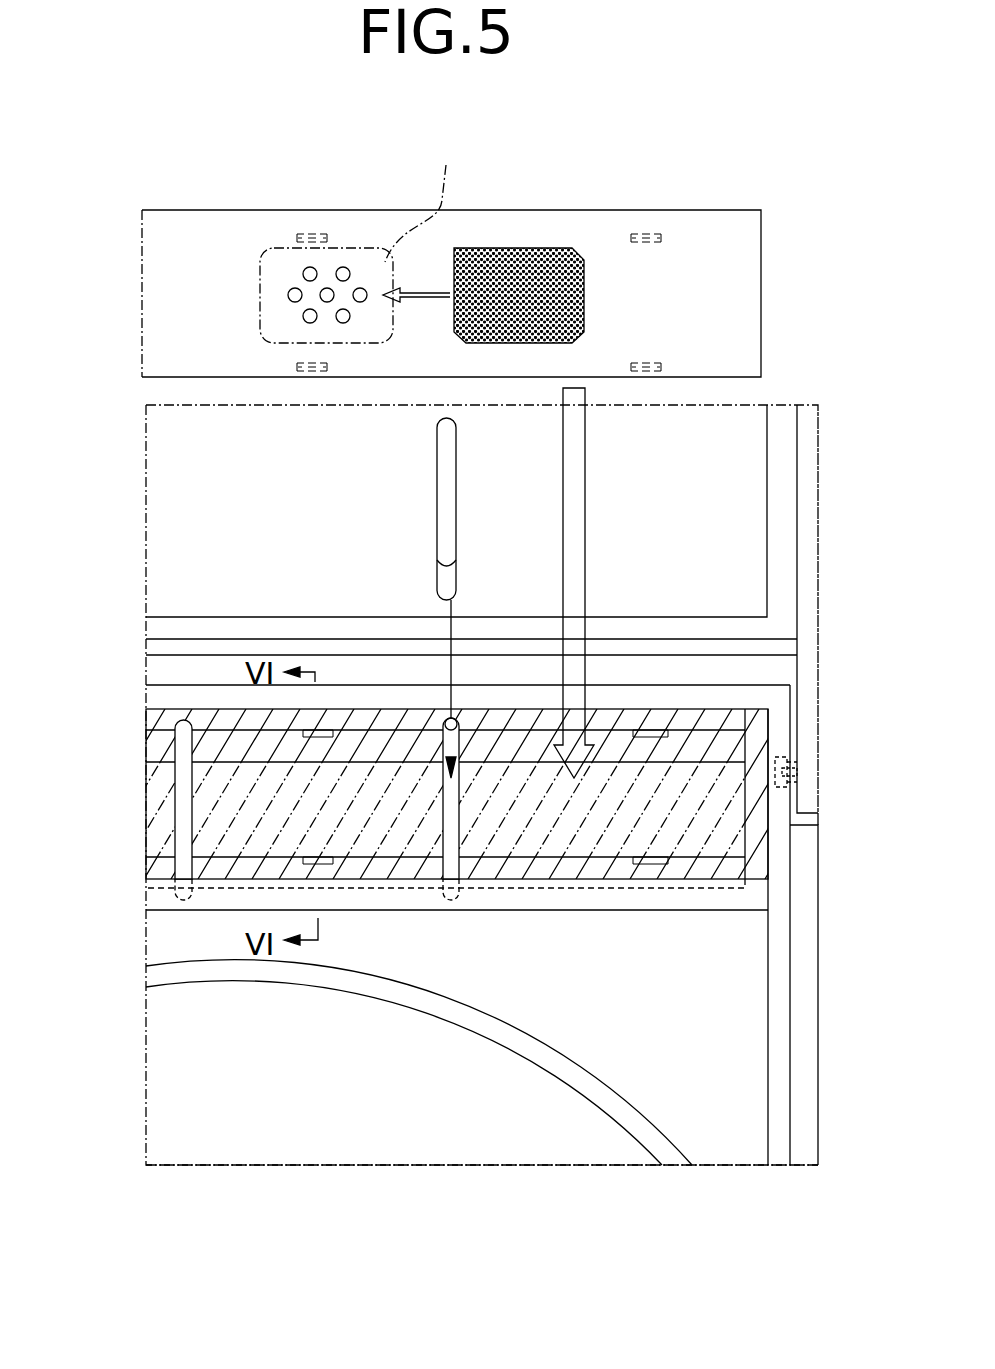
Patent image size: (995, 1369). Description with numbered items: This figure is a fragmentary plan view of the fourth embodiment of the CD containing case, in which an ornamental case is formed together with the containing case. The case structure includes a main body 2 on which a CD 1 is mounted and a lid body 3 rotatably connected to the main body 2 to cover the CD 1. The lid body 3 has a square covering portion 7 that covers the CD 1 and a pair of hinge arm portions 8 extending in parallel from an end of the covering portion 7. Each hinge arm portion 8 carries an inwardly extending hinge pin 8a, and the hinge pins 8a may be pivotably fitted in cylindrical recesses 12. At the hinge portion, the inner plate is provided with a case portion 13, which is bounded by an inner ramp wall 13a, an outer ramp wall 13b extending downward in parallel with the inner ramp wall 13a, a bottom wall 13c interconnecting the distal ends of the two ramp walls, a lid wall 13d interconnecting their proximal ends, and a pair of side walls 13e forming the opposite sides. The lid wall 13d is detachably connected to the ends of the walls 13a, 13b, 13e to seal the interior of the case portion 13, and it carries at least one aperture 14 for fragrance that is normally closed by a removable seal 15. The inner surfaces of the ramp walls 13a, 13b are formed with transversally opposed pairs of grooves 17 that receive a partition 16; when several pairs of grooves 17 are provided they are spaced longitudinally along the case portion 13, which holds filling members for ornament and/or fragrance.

The CD 1 is at (580, 1120).
The main body 2 is at (180, 1071).
The lid body 3 is at (198, 461).
The covering portion 7 is at (750, 462).
The hinge arm portion 8 is at (810, 695).
The hinge pin 8a is at (790, 748).
The recess 12 is at (800, 805).
The case portion 13 is at (466, 856).
The inner ramp wall 13a is at (692, 905).
The outer ramp wall 13b is at (680, 740).
The bottom wall 13c is at (590, 835).
The lid wall 13d is at (745, 306).
The side wall 13e is at (757, 823).
The aperture 14 is at (343, 268).
The removable seal 15 is at (494, 246).
The partition 16 is at (440, 483).
The groove 17 is at (425, 720).